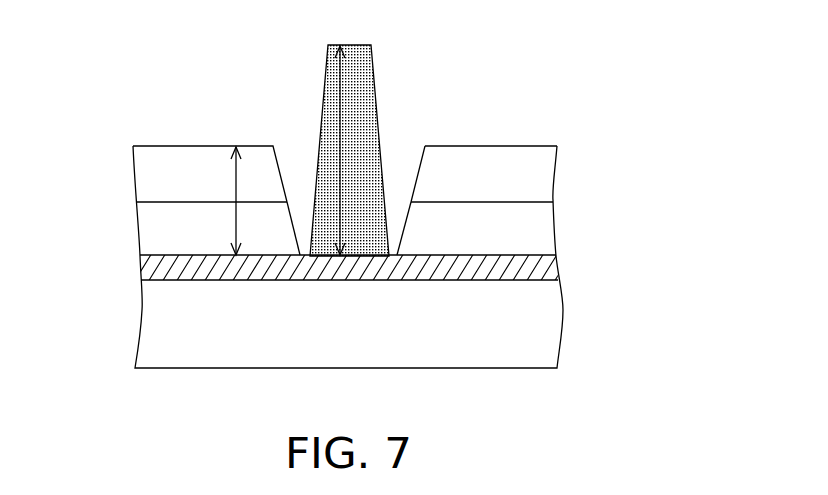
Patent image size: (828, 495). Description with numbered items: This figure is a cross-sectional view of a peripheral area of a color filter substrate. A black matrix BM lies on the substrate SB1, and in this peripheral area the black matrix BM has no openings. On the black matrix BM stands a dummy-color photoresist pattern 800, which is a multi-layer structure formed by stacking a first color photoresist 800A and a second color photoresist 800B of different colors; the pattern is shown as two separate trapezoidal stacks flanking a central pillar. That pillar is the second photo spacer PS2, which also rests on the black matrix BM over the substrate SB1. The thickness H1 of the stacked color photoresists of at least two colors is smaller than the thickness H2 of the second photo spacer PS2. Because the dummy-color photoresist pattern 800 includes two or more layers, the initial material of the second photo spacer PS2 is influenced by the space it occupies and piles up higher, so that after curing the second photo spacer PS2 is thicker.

The dummy-color photoresist pattern 800 is at (642, 38).
The first color photoresist 800A is at (147, 235).
The second color photoresist 800B is at (147, 177).
The second photo spacer PS2 is at (365, 87).
The black matrix BM is at (555, 272).
The substrate SB1 is at (552, 329).
The thickness of the stacked color photoresists H1 is at (248, 201).
The thickness of the second photo spacer H2 is at (356, 150).